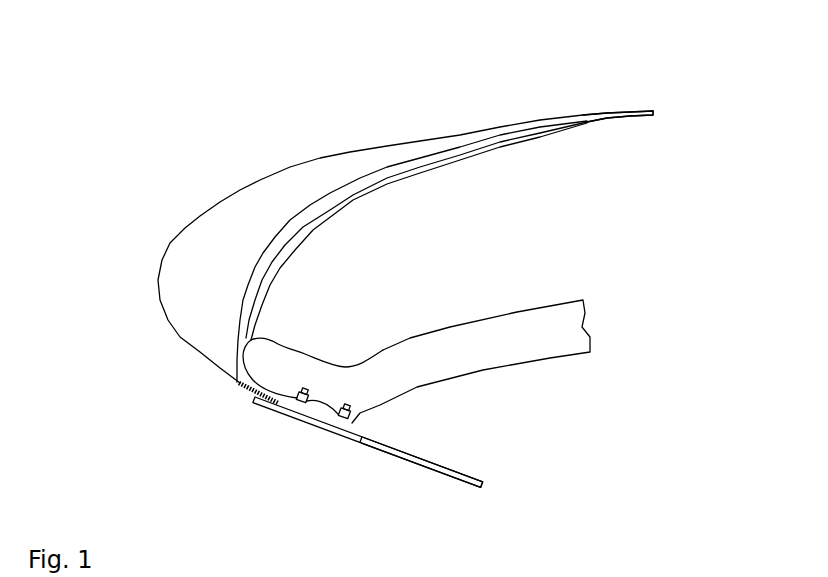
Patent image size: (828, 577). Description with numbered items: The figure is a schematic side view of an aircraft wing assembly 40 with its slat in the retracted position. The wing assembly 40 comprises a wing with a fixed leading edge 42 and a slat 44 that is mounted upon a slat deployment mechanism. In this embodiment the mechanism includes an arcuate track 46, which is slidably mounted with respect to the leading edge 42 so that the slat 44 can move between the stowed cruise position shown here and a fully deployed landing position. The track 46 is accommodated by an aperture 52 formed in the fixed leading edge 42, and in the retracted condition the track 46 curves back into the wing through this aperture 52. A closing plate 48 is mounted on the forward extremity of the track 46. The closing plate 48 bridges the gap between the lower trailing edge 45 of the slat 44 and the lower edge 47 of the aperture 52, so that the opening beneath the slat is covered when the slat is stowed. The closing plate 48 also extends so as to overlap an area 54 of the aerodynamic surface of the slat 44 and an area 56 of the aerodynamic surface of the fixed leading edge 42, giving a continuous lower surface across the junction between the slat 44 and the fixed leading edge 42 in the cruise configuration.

The aircraft wing assembly 40 is at (487, 75).
The fixed leading edge 42 is at (607, 113).
The slat 44 is at (258, 213).
The lower trailing edge 45 is at (257, 398).
The arcuate track 46 is at (507, 343).
The lower edge 47 is at (366, 433).
The closing plate 48 is at (304, 426).
The aperture 52 is at (270, 328).
The area 54 is at (259, 426).
The area 56 is at (367, 462).